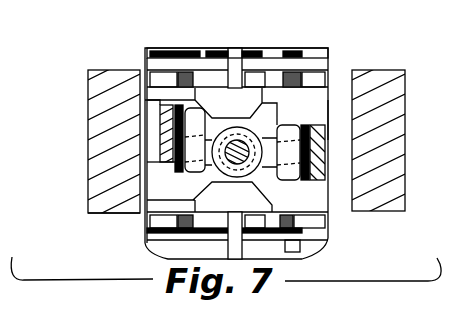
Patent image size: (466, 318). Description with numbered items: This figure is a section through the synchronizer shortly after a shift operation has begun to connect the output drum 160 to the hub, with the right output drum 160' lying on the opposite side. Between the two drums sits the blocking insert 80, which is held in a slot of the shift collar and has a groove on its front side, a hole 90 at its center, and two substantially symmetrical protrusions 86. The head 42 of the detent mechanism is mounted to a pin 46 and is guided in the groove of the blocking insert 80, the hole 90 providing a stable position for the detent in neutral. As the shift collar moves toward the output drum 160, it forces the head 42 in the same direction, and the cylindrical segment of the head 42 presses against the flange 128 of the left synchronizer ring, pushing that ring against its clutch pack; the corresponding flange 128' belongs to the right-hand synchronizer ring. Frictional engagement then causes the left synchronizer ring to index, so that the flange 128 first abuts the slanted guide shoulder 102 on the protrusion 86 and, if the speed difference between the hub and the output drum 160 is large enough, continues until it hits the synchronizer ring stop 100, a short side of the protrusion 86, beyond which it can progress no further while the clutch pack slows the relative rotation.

The left output drum 160 is at (85, 133).
The right output drum 160' is at (405, 135).
The synchronizer ring stop 100 is at (197, 100).
The pin 46 is at (290, 57).
The protrusion 86 is at (237, 140).
The head 42 is at (262, 128).
The flange 128 is at (115, 158).
The flange 128' is at (334, 190).
The guide shoulder 102 is at (160, 118).
The blocking insert 80 is at (328, 116).
The hole 90 is at (119, 214).